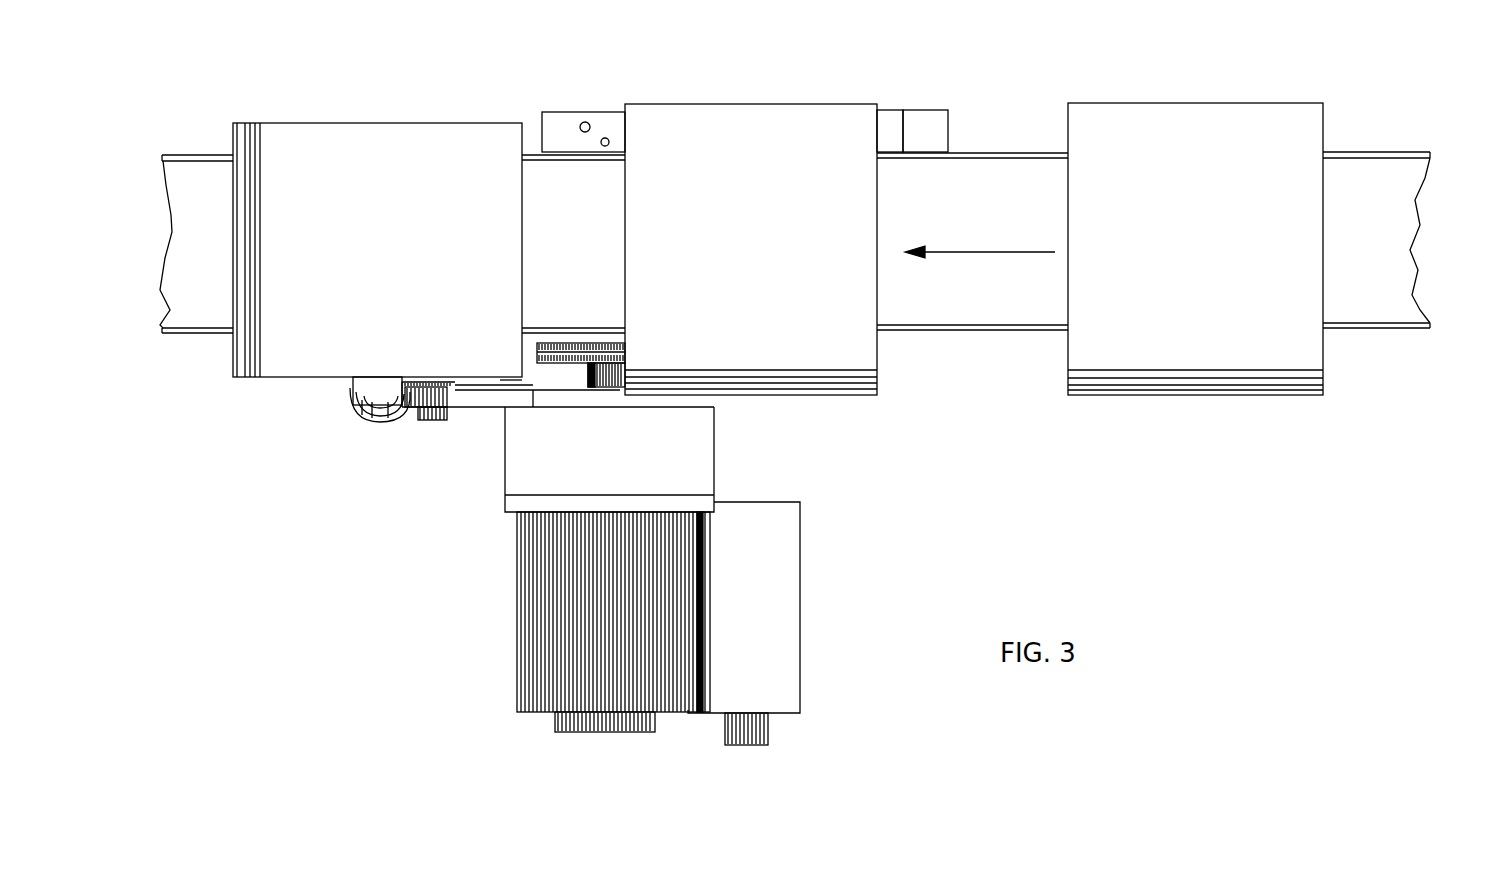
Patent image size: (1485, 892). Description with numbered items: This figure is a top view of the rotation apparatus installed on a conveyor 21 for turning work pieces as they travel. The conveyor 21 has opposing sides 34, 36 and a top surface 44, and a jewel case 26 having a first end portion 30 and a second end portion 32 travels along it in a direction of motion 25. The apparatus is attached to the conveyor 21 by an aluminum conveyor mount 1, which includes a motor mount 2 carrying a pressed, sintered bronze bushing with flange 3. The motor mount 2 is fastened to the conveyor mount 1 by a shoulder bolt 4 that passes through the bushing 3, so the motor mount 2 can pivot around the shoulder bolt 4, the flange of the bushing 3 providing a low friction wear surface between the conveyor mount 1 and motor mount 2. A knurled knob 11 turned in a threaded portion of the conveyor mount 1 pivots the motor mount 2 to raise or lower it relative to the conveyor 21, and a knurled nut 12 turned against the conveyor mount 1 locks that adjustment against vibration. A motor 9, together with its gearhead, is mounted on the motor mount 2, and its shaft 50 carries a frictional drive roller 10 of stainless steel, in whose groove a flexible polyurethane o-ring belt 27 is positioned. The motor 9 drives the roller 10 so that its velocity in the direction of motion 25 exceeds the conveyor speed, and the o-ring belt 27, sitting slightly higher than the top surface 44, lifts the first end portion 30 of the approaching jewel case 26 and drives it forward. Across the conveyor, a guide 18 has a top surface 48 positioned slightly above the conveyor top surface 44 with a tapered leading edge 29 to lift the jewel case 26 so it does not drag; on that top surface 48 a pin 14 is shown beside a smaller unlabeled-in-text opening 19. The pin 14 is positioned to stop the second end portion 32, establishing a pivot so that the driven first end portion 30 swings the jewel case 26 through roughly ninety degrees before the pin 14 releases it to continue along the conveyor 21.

The conveyor mount 1 is at (363, 392).
The motor mount 2 is at (467, 397).
The bushing with flange 3 is at (418, 422).
The shoulder bolt 4 is at (425, 422).
The motor 9 is at (692, 468).
The frictional drive roller 10 is at (572, 364).
The knurled knob 11 is at (355, 417).
The knurled nut 12 is at (373, 422).
The pin 14 is at (584, 122).
The guide 18 is at (895, 120).
The adjustment hole 19 is at (607, 138).
The conveyor 21 is at (1373, 162).
The direction of motion 25 is at (968, 248).
The jewel case 26 is at (795, 219).
The o-ring belt 27 is at (538, 363).
The tapered leading edge 29 is at (928, 130).
The first end portion 30 is at (301, 157).
The second end portion 32 is at (505, 157).
The side 34 is at (1350, 330).
The side 36 is at (1392, 152).
The top surface 44 is at (1373, 264).
The top surface 48 is at (574, 144).
The shaft 50 is at (612, 366).